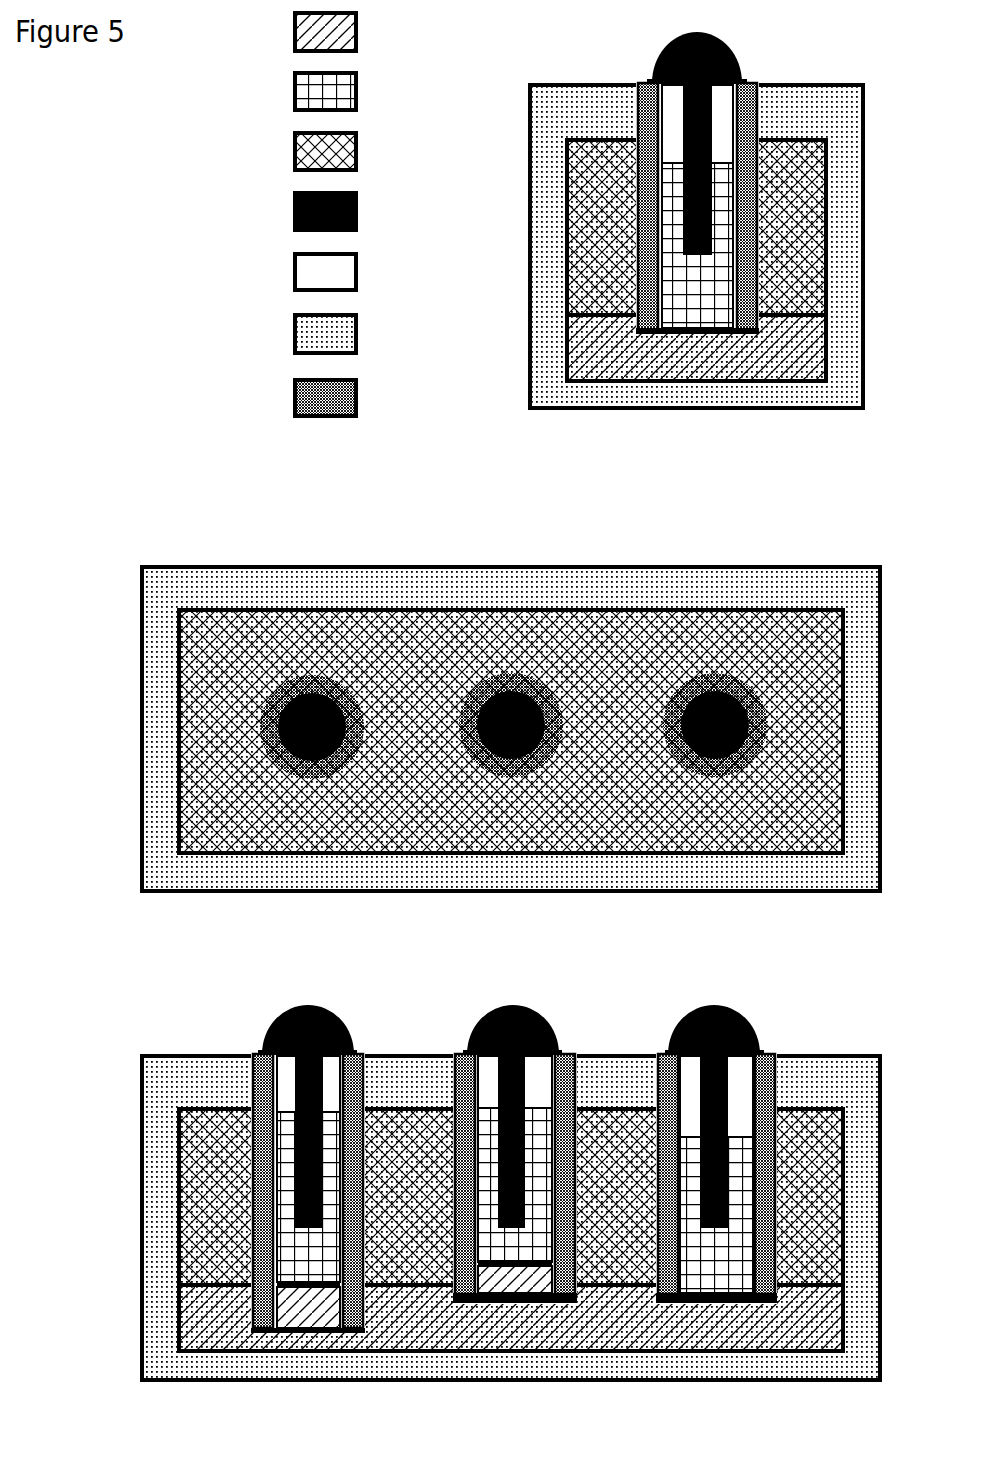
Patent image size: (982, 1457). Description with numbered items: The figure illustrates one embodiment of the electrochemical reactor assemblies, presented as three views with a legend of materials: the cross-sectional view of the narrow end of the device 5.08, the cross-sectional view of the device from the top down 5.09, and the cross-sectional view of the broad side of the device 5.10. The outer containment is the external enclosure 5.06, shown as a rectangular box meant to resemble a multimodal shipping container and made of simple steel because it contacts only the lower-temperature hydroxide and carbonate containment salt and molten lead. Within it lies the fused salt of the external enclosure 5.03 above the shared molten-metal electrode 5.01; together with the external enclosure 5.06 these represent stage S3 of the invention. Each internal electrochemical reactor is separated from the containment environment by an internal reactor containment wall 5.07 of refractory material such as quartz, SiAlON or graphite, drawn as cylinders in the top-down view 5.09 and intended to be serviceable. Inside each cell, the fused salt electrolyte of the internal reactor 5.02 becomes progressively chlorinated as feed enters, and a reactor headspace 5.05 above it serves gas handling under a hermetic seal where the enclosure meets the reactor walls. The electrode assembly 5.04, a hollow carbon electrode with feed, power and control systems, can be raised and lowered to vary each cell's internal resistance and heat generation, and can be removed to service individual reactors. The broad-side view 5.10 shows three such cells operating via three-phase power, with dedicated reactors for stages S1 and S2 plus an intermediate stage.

The molten-metal electrode 5.01 is at (276, 32).
The fused salt electrolyte of internal reactor 5.02 is at (276, 91).
The fused salt of external enclosure 5.03 is at (276, 151).
The electrode assembly 5.04 is at (276, 211).
The reactor headspace 5.05 is at (276, 272).
The external enclosure 5.06 is at (276, 334).
The internal reactor containment wall 5.07 is at (276, 398).
The cross-sectional view of the narrow end of the device 5.08 is at (696, 220).
The cross-sectional view of the device from the top down 5.09 is at (511, 700).
The cross-sectional view of the broad side of the device 5.10 is at (511, 1187).